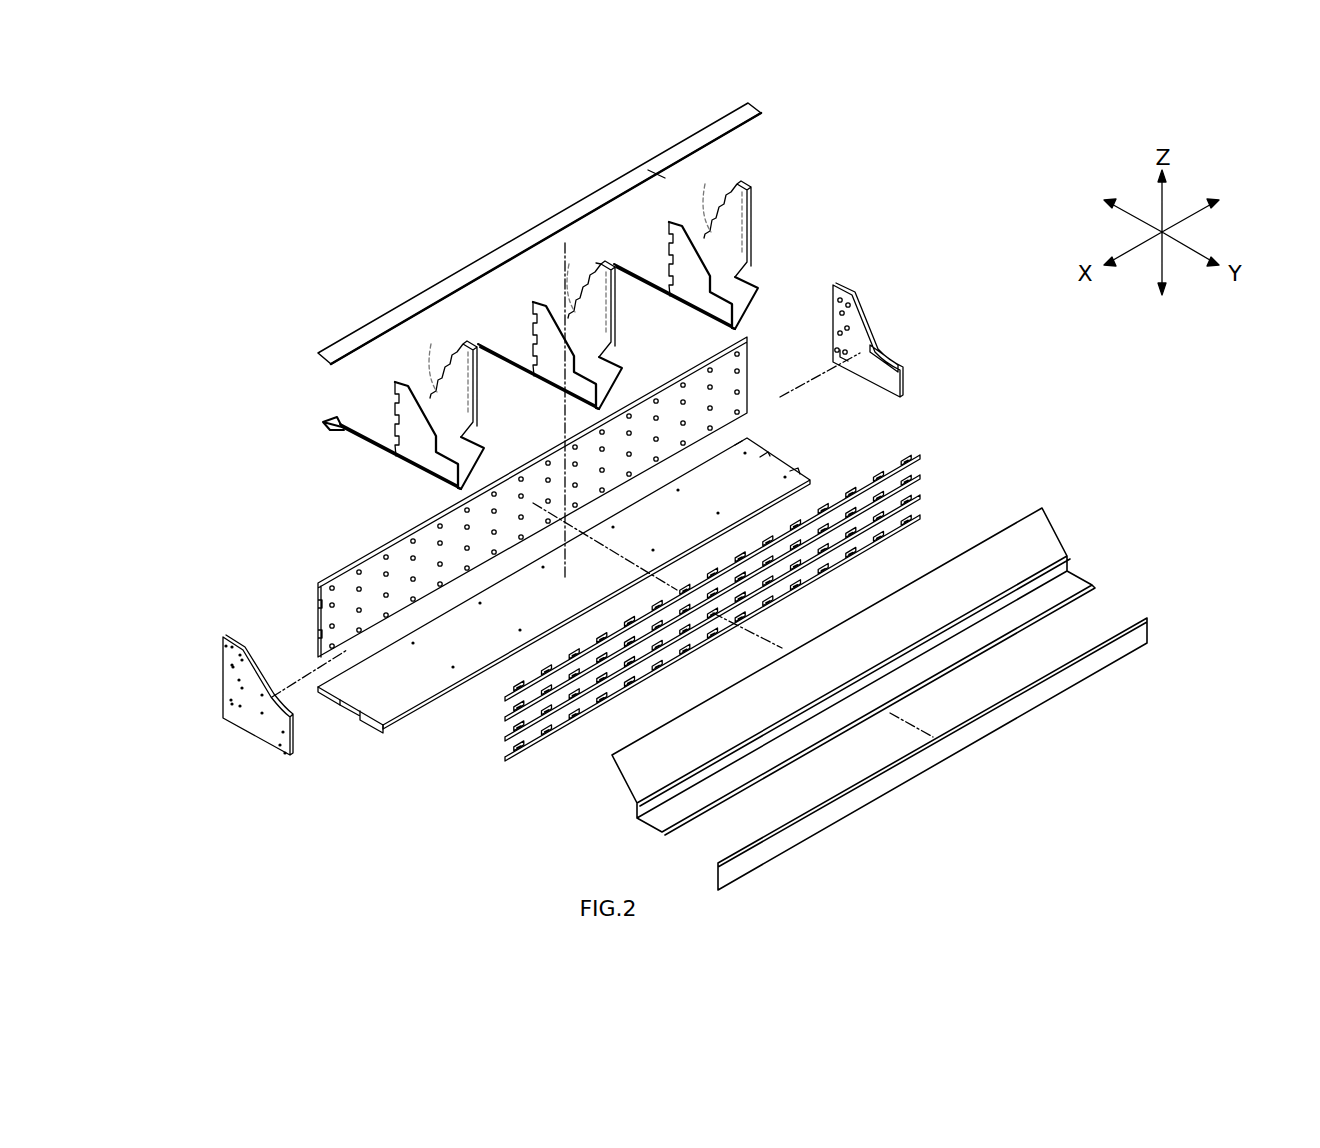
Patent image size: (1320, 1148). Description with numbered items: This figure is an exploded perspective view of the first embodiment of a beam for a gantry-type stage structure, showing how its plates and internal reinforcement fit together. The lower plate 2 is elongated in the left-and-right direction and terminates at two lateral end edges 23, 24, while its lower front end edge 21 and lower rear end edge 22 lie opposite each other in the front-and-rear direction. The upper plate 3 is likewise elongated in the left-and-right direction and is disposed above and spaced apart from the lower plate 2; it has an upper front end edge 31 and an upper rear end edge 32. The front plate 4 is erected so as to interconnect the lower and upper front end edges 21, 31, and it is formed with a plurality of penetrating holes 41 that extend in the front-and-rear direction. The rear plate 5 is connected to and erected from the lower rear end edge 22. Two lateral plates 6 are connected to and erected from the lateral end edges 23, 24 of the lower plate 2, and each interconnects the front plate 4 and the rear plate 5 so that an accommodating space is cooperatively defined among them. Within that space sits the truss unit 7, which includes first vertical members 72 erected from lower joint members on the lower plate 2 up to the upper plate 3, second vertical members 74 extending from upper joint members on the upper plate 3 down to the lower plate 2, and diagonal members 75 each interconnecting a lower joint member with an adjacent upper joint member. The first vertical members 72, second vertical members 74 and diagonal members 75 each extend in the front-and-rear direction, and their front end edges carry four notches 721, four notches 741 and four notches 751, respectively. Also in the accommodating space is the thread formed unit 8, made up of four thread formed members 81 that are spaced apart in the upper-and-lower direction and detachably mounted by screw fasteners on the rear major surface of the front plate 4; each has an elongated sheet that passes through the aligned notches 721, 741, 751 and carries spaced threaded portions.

The lower plate 2 is at (580, 621).
The lower front end edge 21 is at (322, 685).
The lower rear end edge 22 is at (477, 676).
The lateral end edge 23 is at (361, 756).
The lateral end edge 24 is at (807, 463).
The upper plate 3 is at (537, 233).
The upper front end edge 31 is at (528, 228).
The upper rear end edge 32 is at (655, 181).
The front plate 4 is at (490, 497).
The penetrating holes 41 is at (383, 556).
The rear plate 5 is at (971, 752).
The lateral plates 6 is at (877, 321).
The truss unit 7 is at (774, 222).
The first vertical members 72 is at (534, 306).
The notches 721 is at (394, 402).
The second vertical members 74 is at (524, 395).
The notches 741 is at (462, 348).
The diagonal members 75 is at (528, 402).
The notches 751 is at (571, 318).
The thread formed unit 8 is at (765, 580).
The thread formed members 81 is at (924, 453).